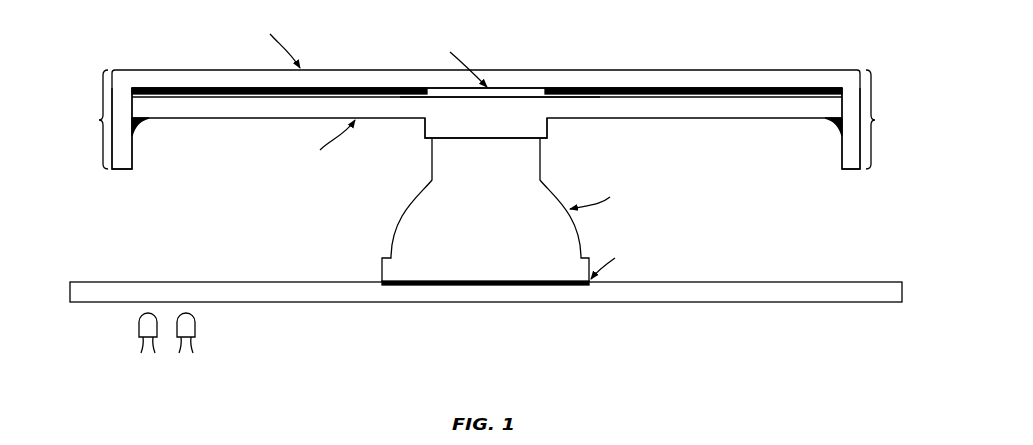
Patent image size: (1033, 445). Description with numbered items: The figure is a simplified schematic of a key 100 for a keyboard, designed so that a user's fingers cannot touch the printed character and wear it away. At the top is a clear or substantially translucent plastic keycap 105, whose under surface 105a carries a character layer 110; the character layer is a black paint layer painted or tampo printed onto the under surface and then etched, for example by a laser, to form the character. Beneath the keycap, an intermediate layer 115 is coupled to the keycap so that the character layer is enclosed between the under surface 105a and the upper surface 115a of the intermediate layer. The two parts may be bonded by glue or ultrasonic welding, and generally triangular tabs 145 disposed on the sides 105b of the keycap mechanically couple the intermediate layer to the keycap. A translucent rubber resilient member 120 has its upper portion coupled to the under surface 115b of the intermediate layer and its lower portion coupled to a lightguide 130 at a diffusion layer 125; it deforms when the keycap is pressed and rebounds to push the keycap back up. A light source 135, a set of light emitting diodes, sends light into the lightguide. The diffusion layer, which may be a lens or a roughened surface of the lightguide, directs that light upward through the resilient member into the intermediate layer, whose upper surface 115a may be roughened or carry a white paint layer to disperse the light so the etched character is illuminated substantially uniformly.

The key 100 is at (838, 325).
The keycap 105 is at (855, 93).
The under surface of the keycap 105a is at (190, 87).
The sides of the keycap 105b is at (487, 119).
The character layer 110 is at (679, 87).
The intermediate layer 115 is at (718, 108).
The upper surface of the intermediate layer 115a is at (655, 99).
The under surface of the intermediate layer 115b is at (541, 139).
The resilient member 120 is at (400, 232).
The diffusion layer 125 is at (588, 286).
The lightguide 130 is at (278, 280).
The light source 135 is at (200, 357).
The tabs 145 is at (148, 124).